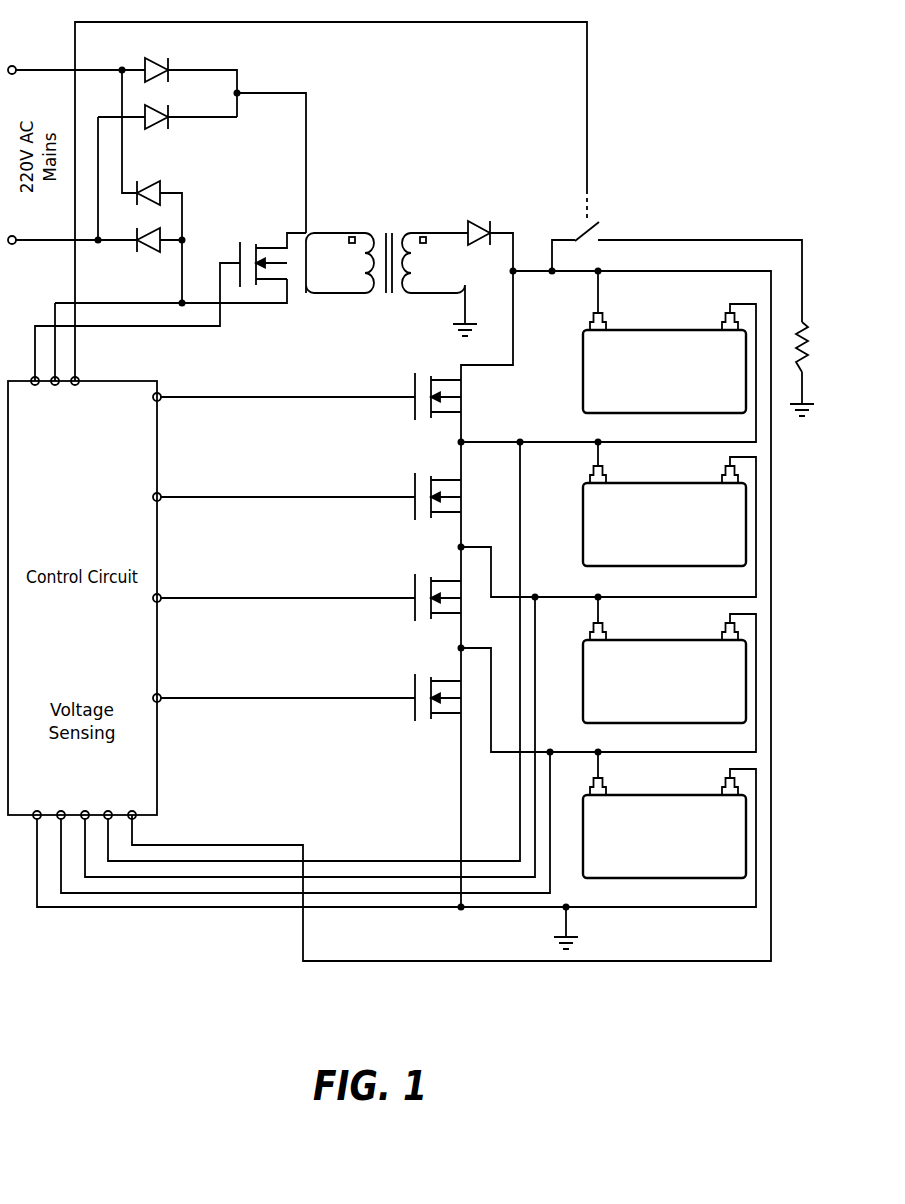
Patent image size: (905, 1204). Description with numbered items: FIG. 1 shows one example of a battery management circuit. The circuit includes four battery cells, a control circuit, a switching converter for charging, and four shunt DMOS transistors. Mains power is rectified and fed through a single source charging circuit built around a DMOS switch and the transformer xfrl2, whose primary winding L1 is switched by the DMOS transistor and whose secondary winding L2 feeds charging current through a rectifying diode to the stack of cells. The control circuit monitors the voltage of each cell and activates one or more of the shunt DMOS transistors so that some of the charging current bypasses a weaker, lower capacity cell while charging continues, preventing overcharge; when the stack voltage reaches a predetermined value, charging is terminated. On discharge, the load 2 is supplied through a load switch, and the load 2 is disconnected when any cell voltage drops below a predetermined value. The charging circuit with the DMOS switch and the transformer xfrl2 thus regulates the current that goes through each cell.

The load 2 is at (793, 347).
The transformer primary winding L1 is at (340, 263).
The transformer secondary winding L2 is at (435, 278).
The transformer xfrl2 is at (391, 264).